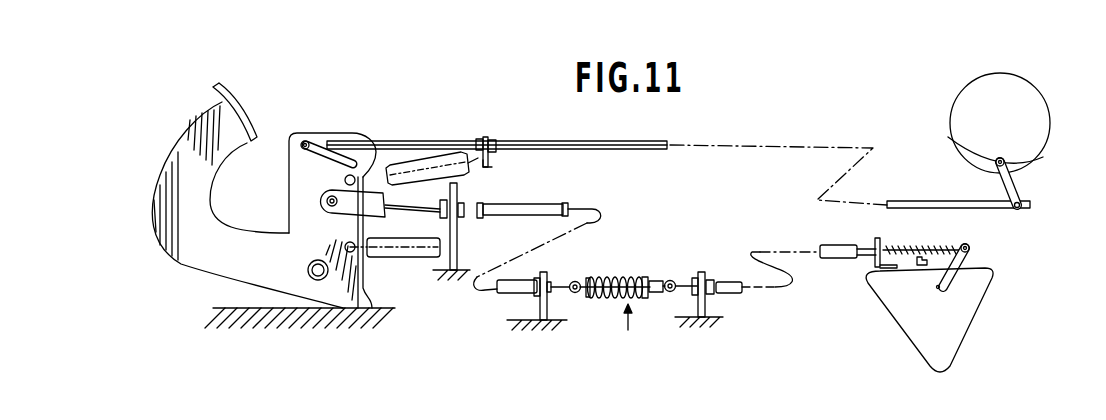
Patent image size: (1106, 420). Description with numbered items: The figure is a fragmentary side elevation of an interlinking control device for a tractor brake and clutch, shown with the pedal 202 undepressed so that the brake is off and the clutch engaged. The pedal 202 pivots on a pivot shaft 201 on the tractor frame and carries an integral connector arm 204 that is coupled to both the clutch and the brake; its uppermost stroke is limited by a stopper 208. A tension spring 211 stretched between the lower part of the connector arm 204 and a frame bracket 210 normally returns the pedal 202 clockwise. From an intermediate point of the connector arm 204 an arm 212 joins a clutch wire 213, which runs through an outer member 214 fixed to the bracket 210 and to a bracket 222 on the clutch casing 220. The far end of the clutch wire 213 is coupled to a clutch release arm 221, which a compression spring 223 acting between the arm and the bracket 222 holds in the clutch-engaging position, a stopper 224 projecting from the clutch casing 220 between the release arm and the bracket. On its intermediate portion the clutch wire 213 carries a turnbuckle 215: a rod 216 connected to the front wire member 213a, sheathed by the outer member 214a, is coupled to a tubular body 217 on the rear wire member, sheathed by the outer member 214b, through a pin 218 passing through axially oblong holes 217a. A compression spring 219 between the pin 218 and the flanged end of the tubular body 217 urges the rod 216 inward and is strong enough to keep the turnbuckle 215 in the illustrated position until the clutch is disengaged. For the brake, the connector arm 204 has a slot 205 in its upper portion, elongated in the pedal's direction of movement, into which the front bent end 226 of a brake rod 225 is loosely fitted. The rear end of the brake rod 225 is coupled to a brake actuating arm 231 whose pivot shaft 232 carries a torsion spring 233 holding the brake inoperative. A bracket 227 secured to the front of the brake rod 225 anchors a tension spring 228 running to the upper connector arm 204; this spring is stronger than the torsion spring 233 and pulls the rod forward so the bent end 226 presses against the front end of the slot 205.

The pivot shaft 201 is at (308, 272).
The pedal 202 is at (183, 260).
The connector arm 204 is at (307, 168).
The slot 205 is at (348, 152).
The stopper 208 is at (357, 309).
The bracket 210 is at (458, 236).
The tension spring 211 is at (420, 258).
The arm 212 is at (373, 198).
The clutch wire 213 is at (597, 216).
The front wire member 213a is at (427, 201).
The outer member 214 is at (566, 203).
The outer member 214a is at (497, 294).
The outer member 214b is at (837, 246).
The turnbuckle 215 is at (621, 330).
The rod 216 is at (583, 280).
The tubular body 217 is at (663, 278).
The axially oblong holes 217a is at (618, 297).
The pin 218 is at (653, 297).
The compression spring 219 is at (613, 280).
The clutch casing 220 is at (987, 288).
The clutch release arm 221 is at (973, 255).
The bracket 222 is at (875, 260).
The compression spring 223 is at (905, 255).
The stopper 224 is at (922, 264).
The brake rod 225 is at (645, 140).
The front bent end 226 is at (305, 140).
The bracket 227 is at (492, 163).
The tension spring 228 is at (438, 157).
The brake actuating arm 231 is at (1019, 185).
The pivot shaft 232 is at (953, 138).
The torsion spring 233 is at (1040, 157).